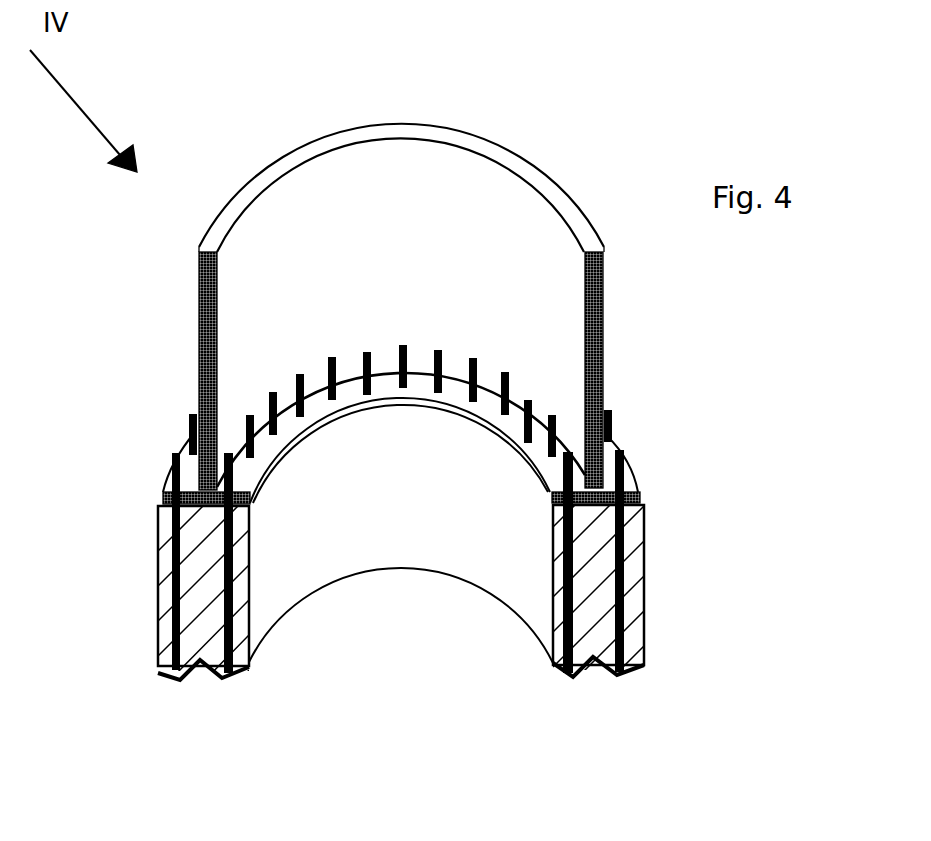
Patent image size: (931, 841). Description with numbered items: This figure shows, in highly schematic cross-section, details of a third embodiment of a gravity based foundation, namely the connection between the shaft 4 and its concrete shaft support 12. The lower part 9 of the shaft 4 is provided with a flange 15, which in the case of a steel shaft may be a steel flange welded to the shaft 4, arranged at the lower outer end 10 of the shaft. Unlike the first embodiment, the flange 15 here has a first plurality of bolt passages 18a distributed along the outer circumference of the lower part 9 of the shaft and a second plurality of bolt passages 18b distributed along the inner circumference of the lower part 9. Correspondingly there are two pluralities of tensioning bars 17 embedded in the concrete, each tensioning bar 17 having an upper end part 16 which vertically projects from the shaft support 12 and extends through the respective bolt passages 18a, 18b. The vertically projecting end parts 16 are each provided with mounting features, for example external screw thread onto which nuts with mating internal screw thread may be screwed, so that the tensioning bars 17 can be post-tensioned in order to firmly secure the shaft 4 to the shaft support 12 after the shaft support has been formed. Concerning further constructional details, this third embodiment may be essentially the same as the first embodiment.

The shaft 4 is at (470, 131).
The lower part of the shaft 9 is at (198, 326).
The lower outer end of the shaft 10 is at (400, 505).
The shaft support 12 is at (632, 597).
The flange 15 is at (400, 519).
The upper end parts 16 is at (190, 432).
The tensioning bars 17 is at (170, 560).
The first plurality of bolt passages 18a is at (163, 493).
The second plurality of bolt passages 18b is at (542, 613).